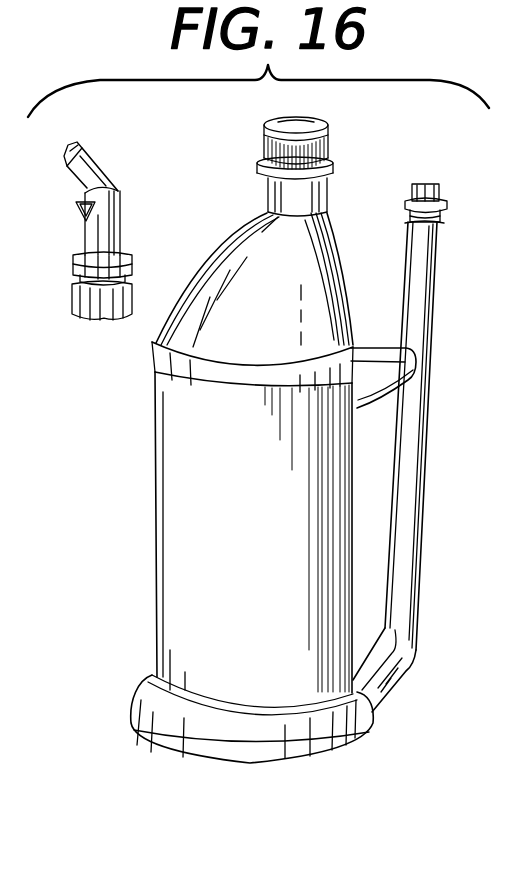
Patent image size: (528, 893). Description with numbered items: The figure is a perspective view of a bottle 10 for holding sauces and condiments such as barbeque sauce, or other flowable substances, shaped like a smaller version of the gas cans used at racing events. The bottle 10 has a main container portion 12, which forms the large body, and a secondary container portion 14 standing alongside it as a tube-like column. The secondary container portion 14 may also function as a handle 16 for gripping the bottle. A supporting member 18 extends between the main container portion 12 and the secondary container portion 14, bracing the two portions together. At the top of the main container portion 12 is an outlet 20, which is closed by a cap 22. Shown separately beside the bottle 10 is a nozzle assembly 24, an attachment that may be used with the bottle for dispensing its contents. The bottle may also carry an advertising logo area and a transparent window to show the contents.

The bottle 10 is at (293, 428).
The main container portion 12 is at (182, 424).
The secondary container portion 14 is at (424, 300).
The handle 16 is at (413, 450).
The supporting member 18 is at (370, 352).
The outlet 20 is at (334, 164).
The cap 22 is at (330, 141).
The nozzle assembly 24 is at (122, 230).